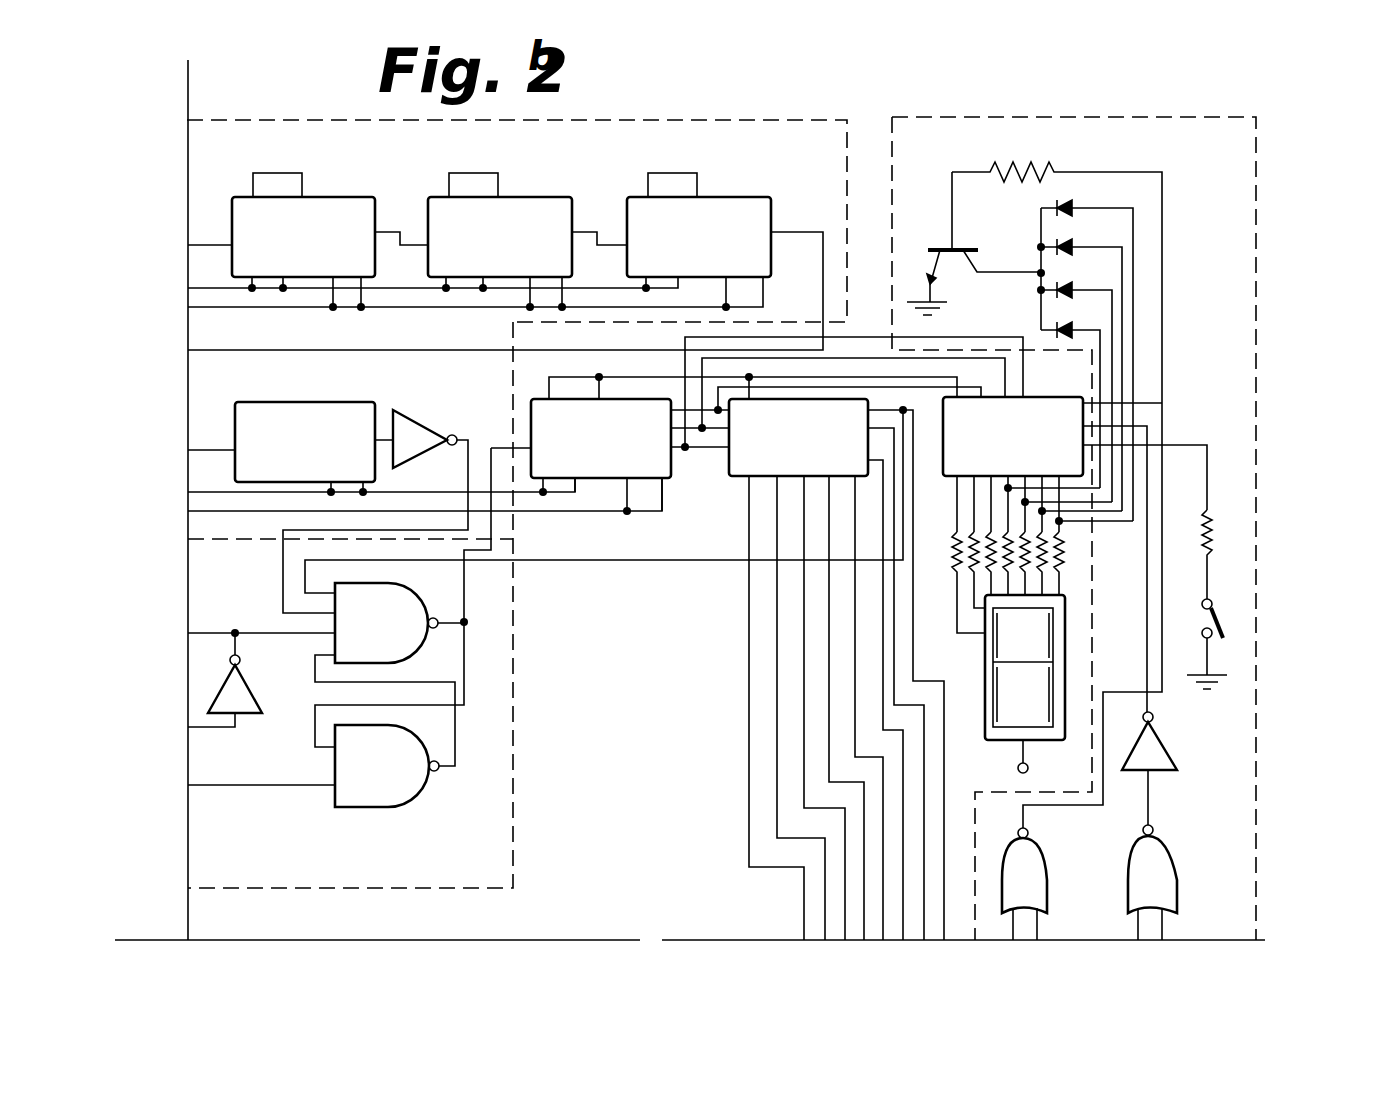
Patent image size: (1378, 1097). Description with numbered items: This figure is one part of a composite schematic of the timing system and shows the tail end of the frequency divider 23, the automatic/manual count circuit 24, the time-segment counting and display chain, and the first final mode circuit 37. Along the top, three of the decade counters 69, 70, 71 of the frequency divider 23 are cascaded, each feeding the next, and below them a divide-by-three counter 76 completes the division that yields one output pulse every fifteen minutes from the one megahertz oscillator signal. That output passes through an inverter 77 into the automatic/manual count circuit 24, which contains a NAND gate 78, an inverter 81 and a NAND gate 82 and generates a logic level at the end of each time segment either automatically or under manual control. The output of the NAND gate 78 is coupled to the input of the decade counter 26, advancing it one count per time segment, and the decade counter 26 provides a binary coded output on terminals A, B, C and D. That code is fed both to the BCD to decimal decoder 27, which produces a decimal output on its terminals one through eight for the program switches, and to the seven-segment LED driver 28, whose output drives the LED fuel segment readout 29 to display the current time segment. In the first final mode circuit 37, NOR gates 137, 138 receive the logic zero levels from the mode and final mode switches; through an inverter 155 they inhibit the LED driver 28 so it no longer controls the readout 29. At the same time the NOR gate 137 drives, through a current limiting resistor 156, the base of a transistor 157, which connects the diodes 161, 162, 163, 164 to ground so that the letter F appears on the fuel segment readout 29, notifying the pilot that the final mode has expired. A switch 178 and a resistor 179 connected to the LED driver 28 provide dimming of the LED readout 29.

The frequency divider 23 is at (773, 120).
The automatic/manual count circuit 24 is at (520, 815).
The decade counter 26 is at (598, 480).
The BCD to decimal decoder 27 is at (744, 478).
The 7-segment LED driver 28 is at (1162, 403).
The LED fuel segment readout 29 is at (1065, 667).
The first final mode circuit 37 is at (1280, 140).
The decade counter 69 is at (232, 205).
The decade counter 70 is at (428, 205).
The decade counter 71 is at (627, 205).
The divide by 3 counter 76 is at (235, 405).
The inverter 77 is at (432, 412).
The NAND gate 78 is at (425, 645).
The inverter 81 is at (212, 692).
The NAND gate 82 is at (375, 807).
The NOR gate 137 is at (1047, 876).
The NOR gate 138 is at (1177, 863).
The inverter 155 is at (1162, 742).
The current limiting resistor 156 is at (1026, 172).
The transistor 157 is at (940, 250).
The diode 161 is at (1075, 208).
The diode 162 is at (1075, 247).
The diode 163 is at (1075, 290).
The diode 164 is at (1075, 330).
The switch 178 is at (1224, 616).
The resistor 179 is at (1213, 532).